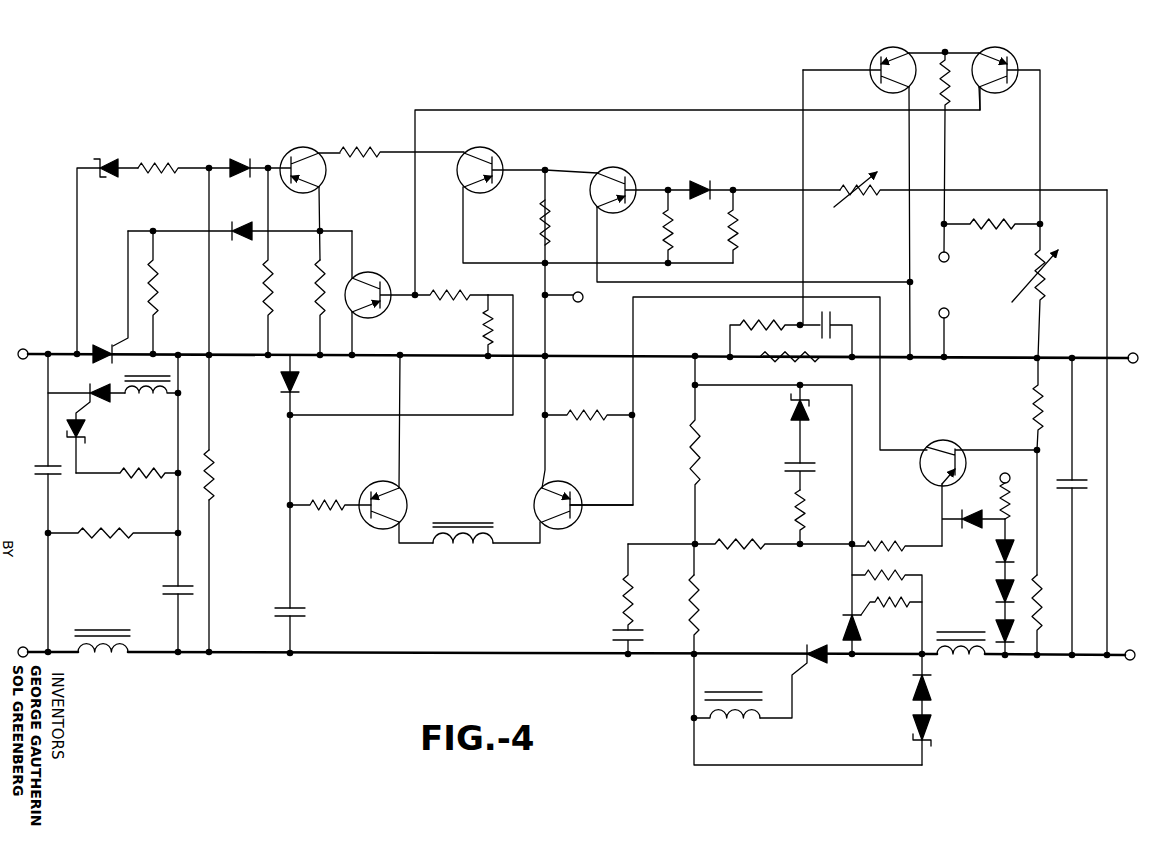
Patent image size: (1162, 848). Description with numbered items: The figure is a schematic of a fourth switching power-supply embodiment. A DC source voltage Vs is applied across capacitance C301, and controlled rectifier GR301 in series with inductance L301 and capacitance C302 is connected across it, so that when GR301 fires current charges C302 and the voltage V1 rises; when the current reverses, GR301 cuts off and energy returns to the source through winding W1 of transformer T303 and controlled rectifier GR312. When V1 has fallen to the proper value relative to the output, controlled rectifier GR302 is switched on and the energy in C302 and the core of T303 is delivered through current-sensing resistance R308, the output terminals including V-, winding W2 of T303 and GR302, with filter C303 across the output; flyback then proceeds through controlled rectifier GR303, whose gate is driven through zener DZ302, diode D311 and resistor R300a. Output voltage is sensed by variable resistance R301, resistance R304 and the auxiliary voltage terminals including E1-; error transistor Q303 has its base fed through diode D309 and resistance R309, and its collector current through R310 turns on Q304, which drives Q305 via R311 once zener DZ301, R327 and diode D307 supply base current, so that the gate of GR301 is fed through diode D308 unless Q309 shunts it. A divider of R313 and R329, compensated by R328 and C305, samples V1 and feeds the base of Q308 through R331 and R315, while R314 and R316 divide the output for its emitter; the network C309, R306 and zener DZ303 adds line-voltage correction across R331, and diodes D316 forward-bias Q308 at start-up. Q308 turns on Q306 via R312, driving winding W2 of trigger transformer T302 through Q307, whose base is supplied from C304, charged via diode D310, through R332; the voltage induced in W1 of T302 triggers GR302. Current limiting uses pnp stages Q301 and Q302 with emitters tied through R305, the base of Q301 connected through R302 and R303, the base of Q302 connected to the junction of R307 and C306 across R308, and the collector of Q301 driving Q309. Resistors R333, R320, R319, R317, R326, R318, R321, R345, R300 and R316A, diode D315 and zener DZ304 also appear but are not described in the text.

The zener diode DZ301 is at (107, 248).
The resistance R327 is at (173, 180).
The diode D307 is at (238, 158).
The transistor stage Q305 is at (312, 203).
The resistance R311 is at (402, 142).
The diode D308 is at (240, 222).
The resistor R333 is at (169, 292).
The resistor R320 is at (250, 261).
The resistor R319 is at (303, 305).
The controlled rectifier GR301 is at (104, 344).
The transistor stage Q309 is at (380, 293).
The resistor R317 is at (451, 284).
The resistor R326 is at (472, 325).
The transistor Q304 is at (501, 180).
The resistance R310 is at (561, 222).
The npn transistor Q303 is at (629, 200).
The diode D309 is at (754, 180).
The resistance R309 is at (683, 226).
The resistance R304 is at (749, 226).
The variable resistance R301 is at (970, 197).
The pnp transistor stage Q302 is at (859, 77).
The resistance R305 is at (960, 152).
The pnp transistor stage Q301 is at (1006, 135).
The resistance R303 is at (992, 213).
The auxiliary voltage terminal E1- is at (957, 332).
The variable resistance R302 is at (1046, 291).
The resistor R314 is at (1019, 404).
The resistor R316 is at (1051, 615).
The filter capacitance C303 is at (1076, 464).
The output terminal V- is at (1136, 684).
The resistor R307 is at (771, 329).
The capacitance C306 is at (844, 327).
The current sensing resistance R308 is at (790, 348).
The resistance R313 is at (712, 464).
The zener diode DZ303 is at (775, 424).
The capacitance C309 is at (783, 471).
The resistor R306 is at (781, 517).
The resistor R331 is at (773, 557).
The resistor R315 is at (897, 536).
The npn transistor stage Q308 is at (978, 454).
The diode D315 is at (983, 509).
The resistor R316A is at (1018, 507).
The serially connected diodes D316 is at (998, 585).
The resistor R300 is at (888, 613).
The resistor R300a is at (891, 614).
The flyback controlled rectifier GR303 is at (833, 617).
The diode D311 is at (943, 695).
The zener diode DZ302 is at (945, 740).
The controlled rectifier GR302 is at (793, 674).
The trigger transformer T302 is at (597, 639).
The transformer winding W1 is at (758, 724).
The transformer winding W2 is at (962, 662).
The transformer T303 is at (561, 524).
The resistance R329 is at (709, 614).
The resistor R328 is at (609, 587).
The capacitance C305 is at (610, 639).
The DC source voltage Vs is at (23, 386).
The controlled rectifier GR312 is at (86, 392).
The zener diode DZ304 is at (100, 446).
The resistor R345 is at (127, 485).
The capacitance C301 is at (60, 482).
The resistor R318 is at (113, 545).
The capacitance C302 is at (164, 600).
The inductance L301 is at (102, 630).
The resistor R321 is at (226, 475).
The voltage across C302 V1 is at (227, 528).
The diode D310 is at (308, 385).
The capacitor C304 is at (305, 622).
The resistance R332 is at (330, 519).
The npn transistor stage Q307 is at (375, 494).
The pnp transistor stage Q306 is at (583, 494).
The resistor R312 is at (589, 406).